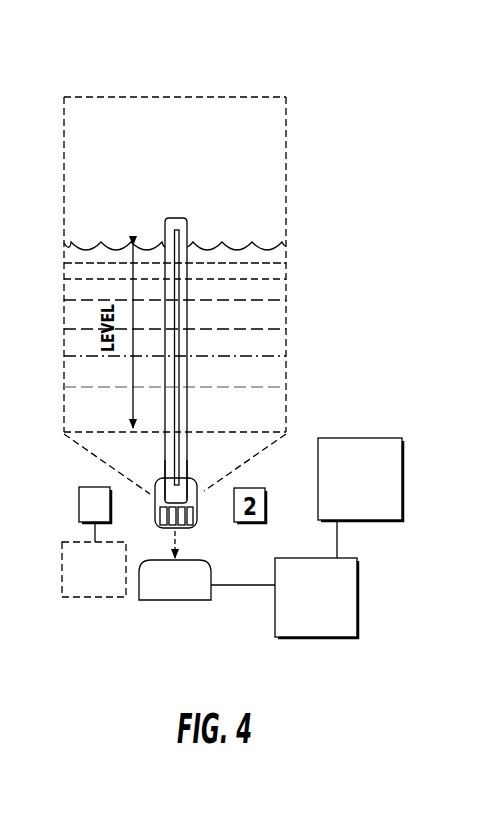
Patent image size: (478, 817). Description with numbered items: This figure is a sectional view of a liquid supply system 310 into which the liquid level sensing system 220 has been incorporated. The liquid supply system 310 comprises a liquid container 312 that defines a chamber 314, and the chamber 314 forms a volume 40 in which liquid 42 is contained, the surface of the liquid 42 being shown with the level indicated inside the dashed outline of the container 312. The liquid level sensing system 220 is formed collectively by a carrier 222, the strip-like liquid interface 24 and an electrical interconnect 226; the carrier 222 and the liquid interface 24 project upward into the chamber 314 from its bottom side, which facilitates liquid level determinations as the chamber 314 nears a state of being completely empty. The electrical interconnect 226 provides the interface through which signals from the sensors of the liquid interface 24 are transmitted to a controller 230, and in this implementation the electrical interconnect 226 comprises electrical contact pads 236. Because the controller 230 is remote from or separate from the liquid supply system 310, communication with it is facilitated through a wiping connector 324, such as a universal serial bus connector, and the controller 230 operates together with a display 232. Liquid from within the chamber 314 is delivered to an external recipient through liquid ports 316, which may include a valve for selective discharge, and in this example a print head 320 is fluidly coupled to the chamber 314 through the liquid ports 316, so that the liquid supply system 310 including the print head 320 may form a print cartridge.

The liquid supply system 310 is at (144, 60).
The liquid container 312 is at (241, 97).
The chamber 314 is at (286, 176).
The volume 40 is at (287, 212).
The liquid 42 is at (85, 249).
The liquid interface 24 is at (165, 241).
The carrier 222 is at (188, 233).
The liquid level sensing system 220 is at (191, 264).
The electrical interconnect 226 is at (196, 483).
The electrical contact pads 236 is at (187, 528).
The wiping connector 324 is at (190, 601).
The liquid ports 316 is at (79, 502).
The print head 320 is at (82, 598).
The display 232 is at (352, 438).
The controller 230 is at (358, 615).